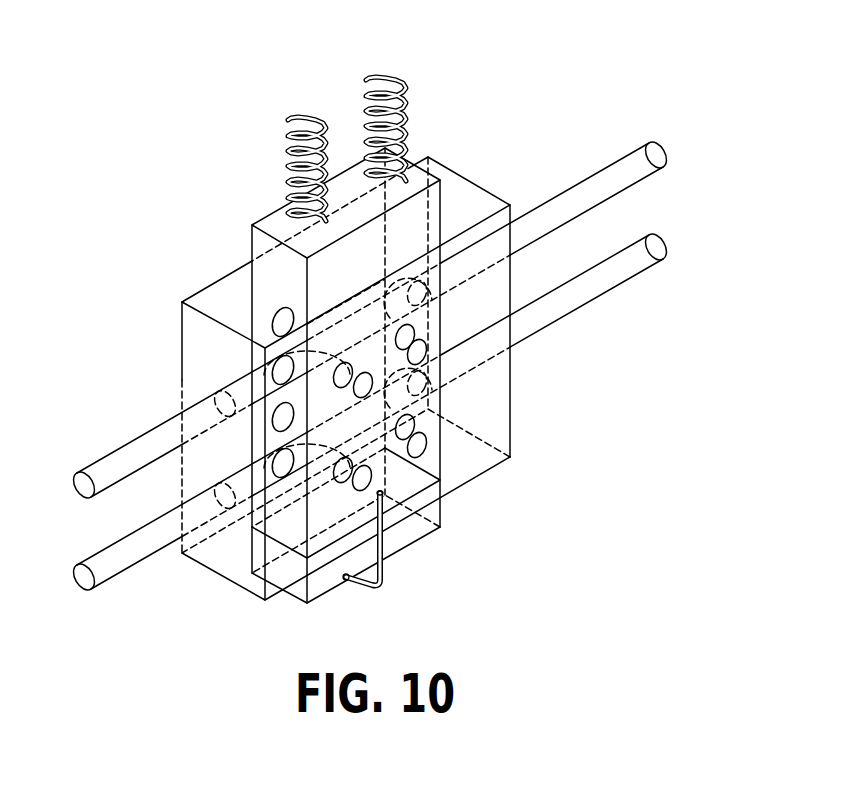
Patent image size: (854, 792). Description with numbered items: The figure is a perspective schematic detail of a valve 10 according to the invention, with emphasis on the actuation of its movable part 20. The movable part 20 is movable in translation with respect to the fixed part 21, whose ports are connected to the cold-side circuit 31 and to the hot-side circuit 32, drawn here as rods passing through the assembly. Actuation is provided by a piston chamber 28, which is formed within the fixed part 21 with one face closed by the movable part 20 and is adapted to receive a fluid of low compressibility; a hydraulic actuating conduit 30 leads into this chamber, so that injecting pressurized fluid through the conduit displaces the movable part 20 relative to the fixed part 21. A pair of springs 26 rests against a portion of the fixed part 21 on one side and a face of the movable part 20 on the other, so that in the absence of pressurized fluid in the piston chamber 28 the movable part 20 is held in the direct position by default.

The valve 10 is at (536, 489).
The movable part 20 is at (262, 245).
The fixed part 21 is at (470, 200).
The springs 26 is at (403, 113).
The piston chamber 28 is at (400, 528).
The hydraulic actuating conduit 30 is at (383, 587).
The cold-side circuit 31 is at (122, 562).
The hot-side circuit 32 is at (590, 287).